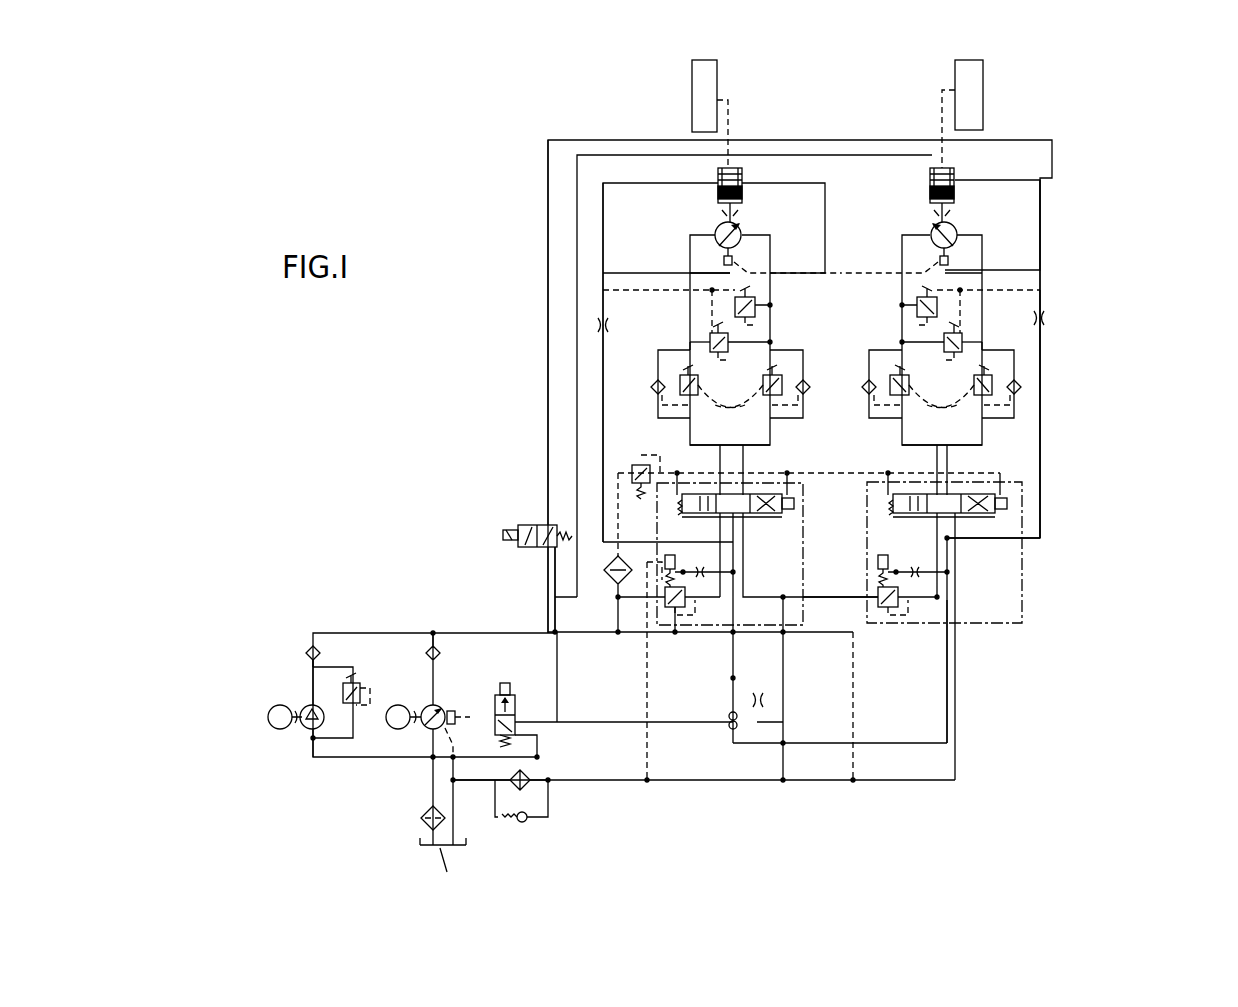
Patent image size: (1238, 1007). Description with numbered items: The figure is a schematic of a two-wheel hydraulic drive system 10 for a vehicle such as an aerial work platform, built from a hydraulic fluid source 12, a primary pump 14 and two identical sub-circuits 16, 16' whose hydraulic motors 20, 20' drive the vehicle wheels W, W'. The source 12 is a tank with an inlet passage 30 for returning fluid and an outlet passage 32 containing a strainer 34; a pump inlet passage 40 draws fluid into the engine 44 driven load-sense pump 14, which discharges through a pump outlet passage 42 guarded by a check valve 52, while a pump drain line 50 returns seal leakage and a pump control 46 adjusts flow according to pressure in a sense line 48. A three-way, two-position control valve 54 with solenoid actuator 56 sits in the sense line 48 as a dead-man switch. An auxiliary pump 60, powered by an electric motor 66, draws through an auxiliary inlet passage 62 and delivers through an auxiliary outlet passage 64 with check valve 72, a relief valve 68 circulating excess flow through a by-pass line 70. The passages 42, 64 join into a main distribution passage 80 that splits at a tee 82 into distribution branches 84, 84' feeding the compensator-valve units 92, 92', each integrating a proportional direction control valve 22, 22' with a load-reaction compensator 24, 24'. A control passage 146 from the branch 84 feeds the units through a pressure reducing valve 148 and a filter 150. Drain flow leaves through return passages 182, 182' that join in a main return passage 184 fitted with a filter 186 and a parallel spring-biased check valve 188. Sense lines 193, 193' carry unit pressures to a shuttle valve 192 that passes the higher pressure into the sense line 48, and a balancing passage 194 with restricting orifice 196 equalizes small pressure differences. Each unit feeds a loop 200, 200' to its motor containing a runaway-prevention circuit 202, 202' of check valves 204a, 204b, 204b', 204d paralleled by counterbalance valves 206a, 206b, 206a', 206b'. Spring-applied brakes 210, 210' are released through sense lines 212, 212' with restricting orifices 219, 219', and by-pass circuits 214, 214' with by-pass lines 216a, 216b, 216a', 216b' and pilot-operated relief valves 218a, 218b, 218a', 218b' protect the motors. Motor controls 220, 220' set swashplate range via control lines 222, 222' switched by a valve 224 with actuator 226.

The hydraulic drive system 10 is at (356, 378).
The hydraulic fluid source 12 is at (442, 847).
The primary pump 14 is at (364, 692).
The sub-circuit 16 is at (596, 363).
The sub-circuit 16' is at (1088, 276).
The hydraulic motor 20 is at (767, 214).
The hydraulic motor 20' is at (977, 217).
The proportional direction control valve 22 is at (736, 529).
The proportional direction control valve 22' is at (1011, 536).
The load-reaction compensator 24 is at (675, 599).
The load-reaction compensator 24' is at (866, 602).
The inlet passage 30 is at (455, 825).
The outlet passage 32 is at (428, 783).
The strainer 34 is at (421, 820).
The pump inlet passage 40 is at (428, 728).
The pump outlet passage 42 is at (449, 668).
The engine 44 is at (425, 722).
The pump control 46 is at (452, 710).
The sense line 48 is at (594, 723).
The pump drain line 50 is at (465, 757).
The check valve 52 is at (428, 642).
The control valve 54 is at (515, 712).
The solenoid actuator 56 is at (510, 683).
The auxiliary pump 60 is at (285, 730).
The auxiliary inlet passage 62 is at (312, 732).
The auxiliary outlet passage 64 is at (385, 635).
The electric motor 66 is at (268, 715).
The relief valve 68 is at (356, 683).
The by-pass line 70 is at (338, 665).
The check valve 72 is at (308, 650).
The main hydraulic fluid distribution passage 80 is at (517, 630).
The tee 82 is at (621, 636).
The distribution branch 84 is at (700, 628).
The distribution branch 84' is at (840, 626).
The compensator-valve unit 92 is at (758, 554).
The compensator-valve unit 92' is at (1037, 556).
The control passage 146 is at (809, 501).
The pressure reducing valve 148 is at (633, 463).
The filter 150 is at (611, 582).
The return passage 182 is at (841, 719).
The return passage 182' is at (928, 679).
The main return passage 184 is at (712, 783).
The filter 186 is at (532, 780).
The spring-biased check valve 188 is at (530, 820).
The shuttle valve 192 is at (728, 722).
The sense line 193 is at (758, 700).
The sense line 193' is at (1012, 671).
The balancing passage 194 is at (783, 722).
The restricting orifice 196 is at (762, 700).
The loop 200 is at (616, 340).
The loop 200' is at (917, 330).
The runaway-prevention circuit 202 is at (626, 439).
The runaway-prevention circuit 202' is at (1019, 458).
The check valve 204a is at (651, 387).
The check valve 204b is at (832, 405).
The check valve 204b' is at (1076, 385).
The check valve 204d is at (917, 414).
The counterbalance valve 206a is at (709, 399).
The counterbalance valve 206b is at (776, 406).
The counterbalance valve 206a' is at (1035, 437).
The counterbalance valve 206b' is at (1074, 402).
The brake 210 is at (768, 145).
The brake 210' is at (915, 127).
The sense line 212 is at (714, 362).
The sense line 212' is at (1027, 181).
The by-pass circuit 214 is at (552, 362).
The by-pass circuit 214' is at (1114, 412).
The by-pass line 216a is at (683, 249).
The by-pass line 216a' is at (1082, 273).
The by-pass line 216b is at (773, 345).
The by-pass line 216b' is at (907, 337).
The pilot operated relief valve 218a is at (720, 309).
The pilot operated relief valve 218a' is at (945, 306).
The pilot operated relief valve 218b is at (706, 323).
The pilot operated relief valve 218b' is at (1108, 371).
The restricting orifice 219 is at (514, 316).
The restricting orifice 219' is at (1121, 337).
The motor control 220 is at (782, 240).
The motor control 220' is at (993, 230).
The control line 222 is at (682, 389).
The line 222' is at (1105, 346).
The valve 224 is at (535, 525).
The actuator 226 is at (503, 535).
The vehicle wheel W is at (659, 95).
The vehicle wheel W' is at (1015, 98).